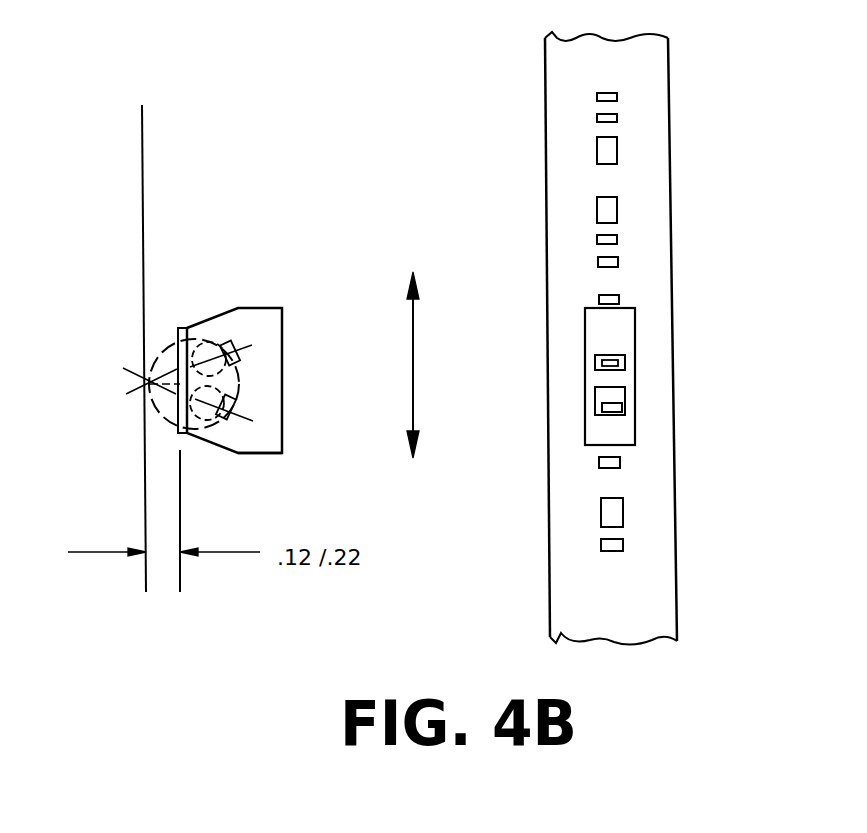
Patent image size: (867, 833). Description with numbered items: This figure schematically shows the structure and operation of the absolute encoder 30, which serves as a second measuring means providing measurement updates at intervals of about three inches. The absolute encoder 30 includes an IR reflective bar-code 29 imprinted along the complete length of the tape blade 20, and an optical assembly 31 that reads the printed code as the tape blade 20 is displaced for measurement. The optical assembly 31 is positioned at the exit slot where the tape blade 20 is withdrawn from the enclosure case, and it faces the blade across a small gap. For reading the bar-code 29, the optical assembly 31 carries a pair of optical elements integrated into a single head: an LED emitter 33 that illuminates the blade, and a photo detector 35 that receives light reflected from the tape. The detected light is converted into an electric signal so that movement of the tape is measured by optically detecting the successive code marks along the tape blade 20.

The tape blade 20 is at (557, 172).
The bar-code 29 is at (615, 213).
The absolute encoder 30 is at (283, 407).
The optical assembly 31 is at (183, 328).
The LED emitter 33 is at (253, 445).
The photo detector 35 is at (229, 347).